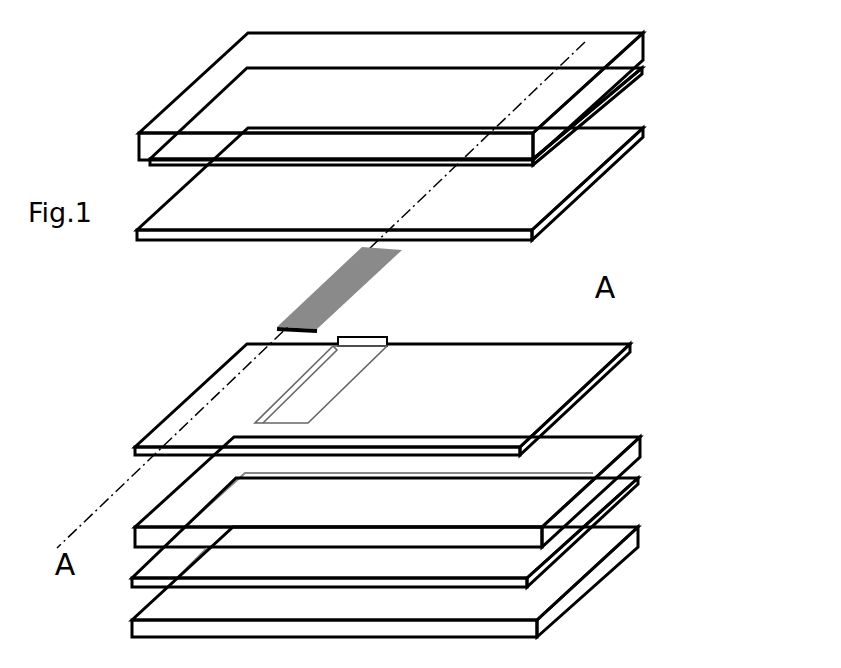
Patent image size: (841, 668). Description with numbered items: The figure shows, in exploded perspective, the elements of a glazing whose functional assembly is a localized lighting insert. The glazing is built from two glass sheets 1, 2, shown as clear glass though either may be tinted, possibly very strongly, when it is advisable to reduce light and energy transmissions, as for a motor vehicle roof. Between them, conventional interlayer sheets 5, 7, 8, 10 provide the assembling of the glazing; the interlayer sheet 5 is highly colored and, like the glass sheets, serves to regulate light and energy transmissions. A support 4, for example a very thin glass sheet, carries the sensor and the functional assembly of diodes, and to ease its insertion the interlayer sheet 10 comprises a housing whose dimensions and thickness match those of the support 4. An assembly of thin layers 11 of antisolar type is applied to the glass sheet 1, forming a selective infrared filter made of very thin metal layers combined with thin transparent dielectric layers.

The glass sheet 1 is at (613, 48).
The assembly of thin layers 11 is at (607, 105).
The interlayer sheet 5 is at (464, 214).
The support 4 is at (347, 297).
The interlayer sheet 10 is at (473, 392).
The interlayer sheet 7 is at (590, 448).
The interlayer sheet 8 is at (637, 483).
The glass sheet 2 is at (632, 522).